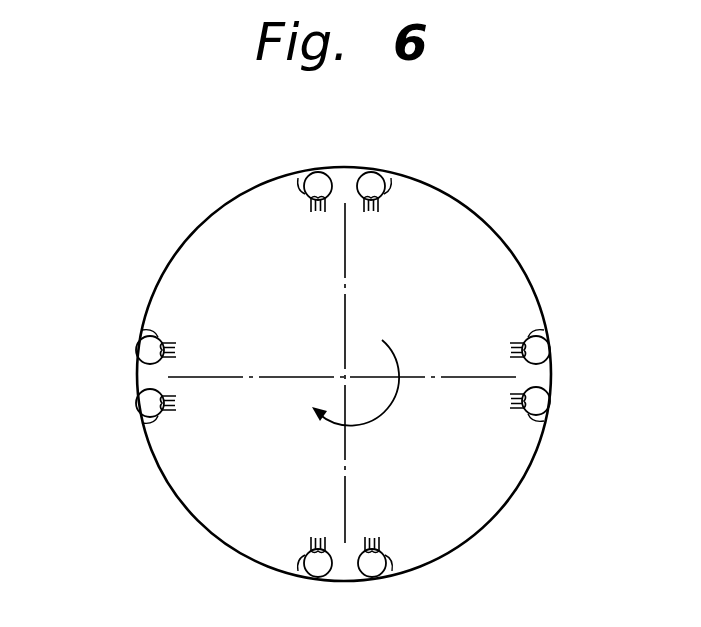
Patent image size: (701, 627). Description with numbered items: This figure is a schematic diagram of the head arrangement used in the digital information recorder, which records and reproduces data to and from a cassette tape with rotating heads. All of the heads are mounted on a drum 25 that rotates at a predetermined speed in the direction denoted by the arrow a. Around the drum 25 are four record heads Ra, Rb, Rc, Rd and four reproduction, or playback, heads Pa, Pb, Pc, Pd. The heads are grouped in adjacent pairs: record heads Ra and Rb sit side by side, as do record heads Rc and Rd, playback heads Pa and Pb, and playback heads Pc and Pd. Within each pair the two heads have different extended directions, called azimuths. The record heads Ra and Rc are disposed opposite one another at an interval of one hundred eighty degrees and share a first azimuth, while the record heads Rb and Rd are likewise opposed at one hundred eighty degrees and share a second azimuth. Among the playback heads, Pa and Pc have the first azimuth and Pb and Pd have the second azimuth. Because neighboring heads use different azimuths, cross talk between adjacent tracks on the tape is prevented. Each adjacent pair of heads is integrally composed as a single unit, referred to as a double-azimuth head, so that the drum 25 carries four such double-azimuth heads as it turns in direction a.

The drum 25 is at (507, 244).
The rotation direction a is at (358, 392).
The reproduction head Pa is at (400, 574).
The reproduction head Pb is at (290, 575).
The reproduction head Pc is at (285, 175).
The reproduction head Pd is at (405, 176).
The record head Ra is at (146, 446).
The record head Rb is at (145, 320).
The record head Rc is at (546, 320).
The record head Rd is at (548, 427).